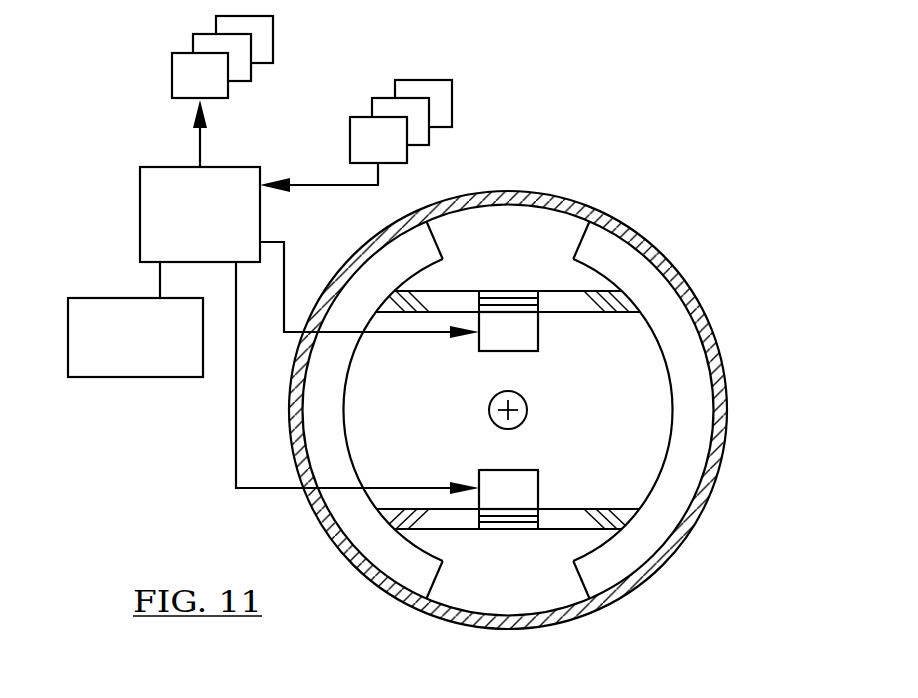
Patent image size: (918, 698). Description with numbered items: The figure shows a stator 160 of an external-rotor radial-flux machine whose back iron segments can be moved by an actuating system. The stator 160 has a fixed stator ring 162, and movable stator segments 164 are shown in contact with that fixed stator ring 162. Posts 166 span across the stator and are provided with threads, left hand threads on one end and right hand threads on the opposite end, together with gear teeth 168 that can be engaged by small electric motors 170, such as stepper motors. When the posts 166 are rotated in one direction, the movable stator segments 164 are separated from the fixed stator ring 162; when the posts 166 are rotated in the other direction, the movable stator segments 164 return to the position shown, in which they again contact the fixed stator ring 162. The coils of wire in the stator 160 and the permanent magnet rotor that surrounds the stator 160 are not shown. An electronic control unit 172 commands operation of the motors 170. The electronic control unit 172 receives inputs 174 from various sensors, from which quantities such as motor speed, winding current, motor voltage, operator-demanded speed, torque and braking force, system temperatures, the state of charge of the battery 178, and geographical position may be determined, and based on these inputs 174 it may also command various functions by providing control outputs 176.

The stator 160 is at (719, 145).
The fixed stator ring 162 is at (697, 326).
The movable stator segments 164 is at (417, 272).
The posts 166 is at (460, 294).
The gear teeth 168 is at (507, 297).
The small electric motors 170 is at (527, 343).
The electronic control unit (ECU) 172 is at (181, 247).
The inputs 174 is at (472, 120).
The control outputs 176 is at (149, 54).
The battery 178 is at (117, 367).